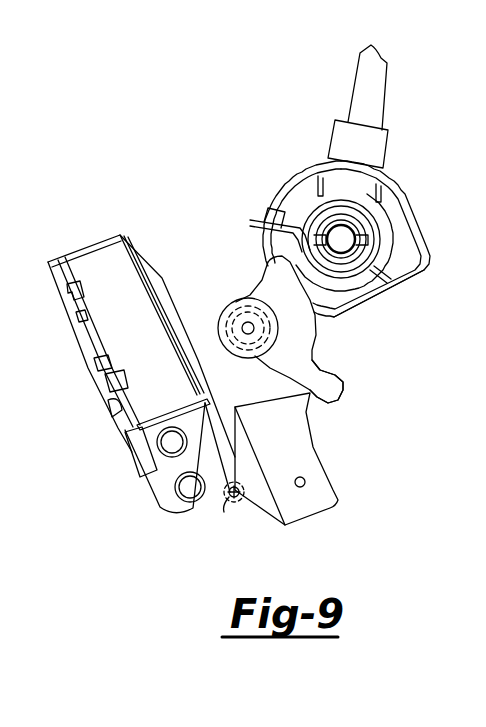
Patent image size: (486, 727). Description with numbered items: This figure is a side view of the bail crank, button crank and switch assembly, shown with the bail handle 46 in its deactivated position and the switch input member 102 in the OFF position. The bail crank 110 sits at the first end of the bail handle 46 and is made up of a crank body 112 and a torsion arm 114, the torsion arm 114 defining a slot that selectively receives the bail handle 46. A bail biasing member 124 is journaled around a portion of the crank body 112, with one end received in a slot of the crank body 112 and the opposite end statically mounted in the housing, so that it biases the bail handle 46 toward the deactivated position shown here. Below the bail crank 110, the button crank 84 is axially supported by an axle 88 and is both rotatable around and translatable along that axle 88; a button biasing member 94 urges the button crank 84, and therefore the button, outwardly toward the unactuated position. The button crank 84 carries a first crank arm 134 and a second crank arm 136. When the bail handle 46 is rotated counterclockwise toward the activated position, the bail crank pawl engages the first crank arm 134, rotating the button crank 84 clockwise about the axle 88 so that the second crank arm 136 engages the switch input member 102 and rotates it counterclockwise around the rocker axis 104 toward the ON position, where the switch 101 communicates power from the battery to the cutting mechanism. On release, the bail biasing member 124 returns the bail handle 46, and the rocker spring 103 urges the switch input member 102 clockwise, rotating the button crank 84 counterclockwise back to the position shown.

The bail handle 46 is at (382, 72).
The torsion arm 114 is at (380, 146).
The bail crank 110 is at (407, 210).
The bail biasing member 124 is at (385, 240).
The crank body 112 is at (423, 278).
The first crank arm 134 is at (255, 258).
The button crank 84 is at (313, 342).
The second crank arm 136 is at (333, 383).
The button biasing member 94 is at (223, 300).
The axle 88 is at (248, 328).
The switch 101 is at (99, 233).
The switch input member 102 is at (300, 455).
The rocker spring 103 is at (255, 500).
The rocker axis 104 is at (228, 500).